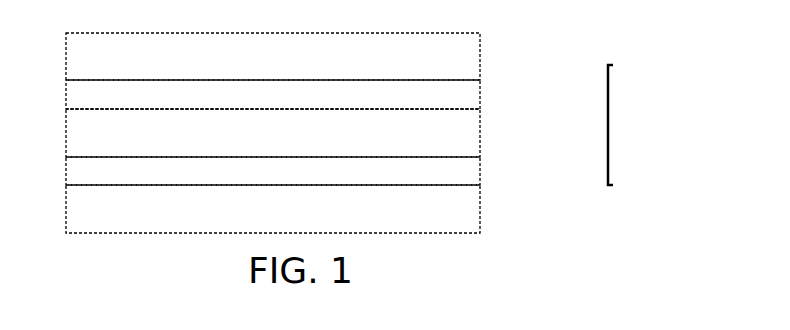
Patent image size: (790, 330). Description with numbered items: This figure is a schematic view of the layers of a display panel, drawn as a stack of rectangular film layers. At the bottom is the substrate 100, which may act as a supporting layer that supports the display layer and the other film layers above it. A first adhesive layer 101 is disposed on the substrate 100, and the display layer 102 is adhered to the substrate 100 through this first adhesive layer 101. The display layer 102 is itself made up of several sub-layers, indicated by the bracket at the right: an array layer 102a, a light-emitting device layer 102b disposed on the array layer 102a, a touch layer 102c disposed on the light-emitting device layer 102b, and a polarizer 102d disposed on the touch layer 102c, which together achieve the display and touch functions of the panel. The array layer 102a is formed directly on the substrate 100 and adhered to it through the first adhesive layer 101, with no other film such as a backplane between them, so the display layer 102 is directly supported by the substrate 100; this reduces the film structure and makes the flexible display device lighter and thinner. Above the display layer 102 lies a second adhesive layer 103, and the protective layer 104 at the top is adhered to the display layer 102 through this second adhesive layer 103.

The substrate 100 is at (480, 219).
The first adhesive layer 101 is at (480, 177).
The display layer 102 is at (480, 140).
The array layer 102a is at (640, 76).
The light-emitting device layer 102b is at (640, 109).
The touch layer 102c is at (639, 140).
The polarizer 102d is at (640, 170).
The second adhesive layer 103 is at (480, 91).
The protective layer 104 is at (480, 51).